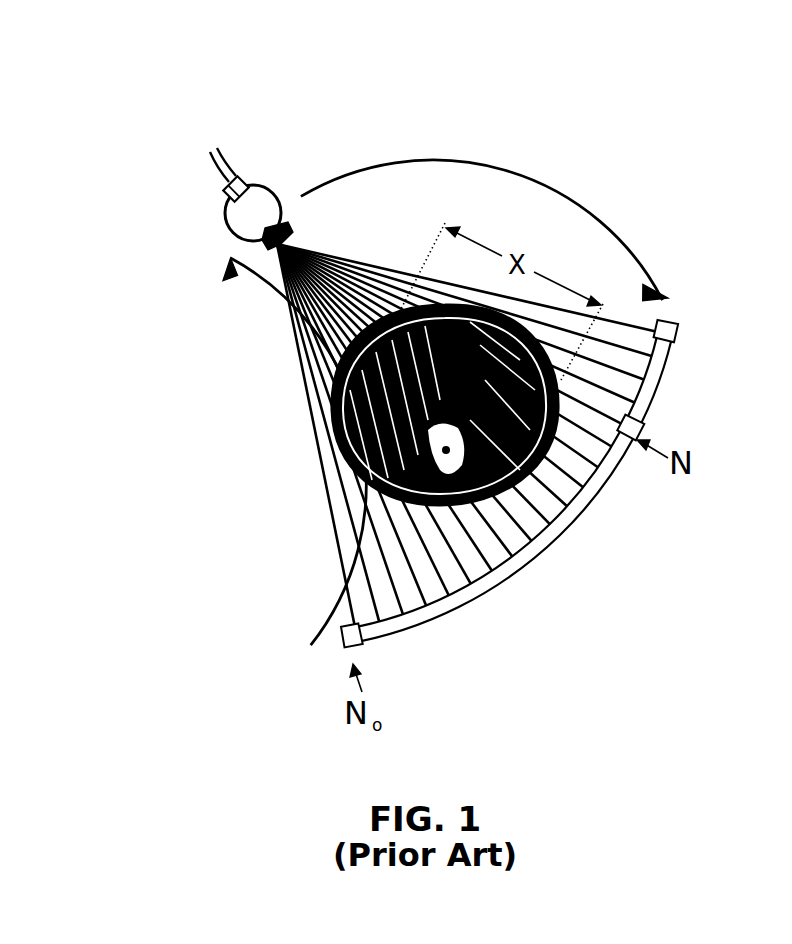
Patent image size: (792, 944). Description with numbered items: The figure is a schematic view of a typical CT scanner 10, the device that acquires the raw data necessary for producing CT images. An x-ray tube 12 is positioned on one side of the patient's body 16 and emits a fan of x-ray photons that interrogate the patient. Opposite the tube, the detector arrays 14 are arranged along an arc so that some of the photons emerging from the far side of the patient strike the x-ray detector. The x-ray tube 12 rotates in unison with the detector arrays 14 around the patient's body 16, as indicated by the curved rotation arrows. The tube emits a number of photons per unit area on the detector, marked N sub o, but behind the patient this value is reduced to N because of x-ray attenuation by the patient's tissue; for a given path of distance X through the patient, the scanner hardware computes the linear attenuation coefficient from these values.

The CT scanner 10 is at (185, 110).
The x-ray tube 12 is at (263, 186).
The detector arrays 14 is at (521, 573).
The patient's body 16 is at (330, 416).